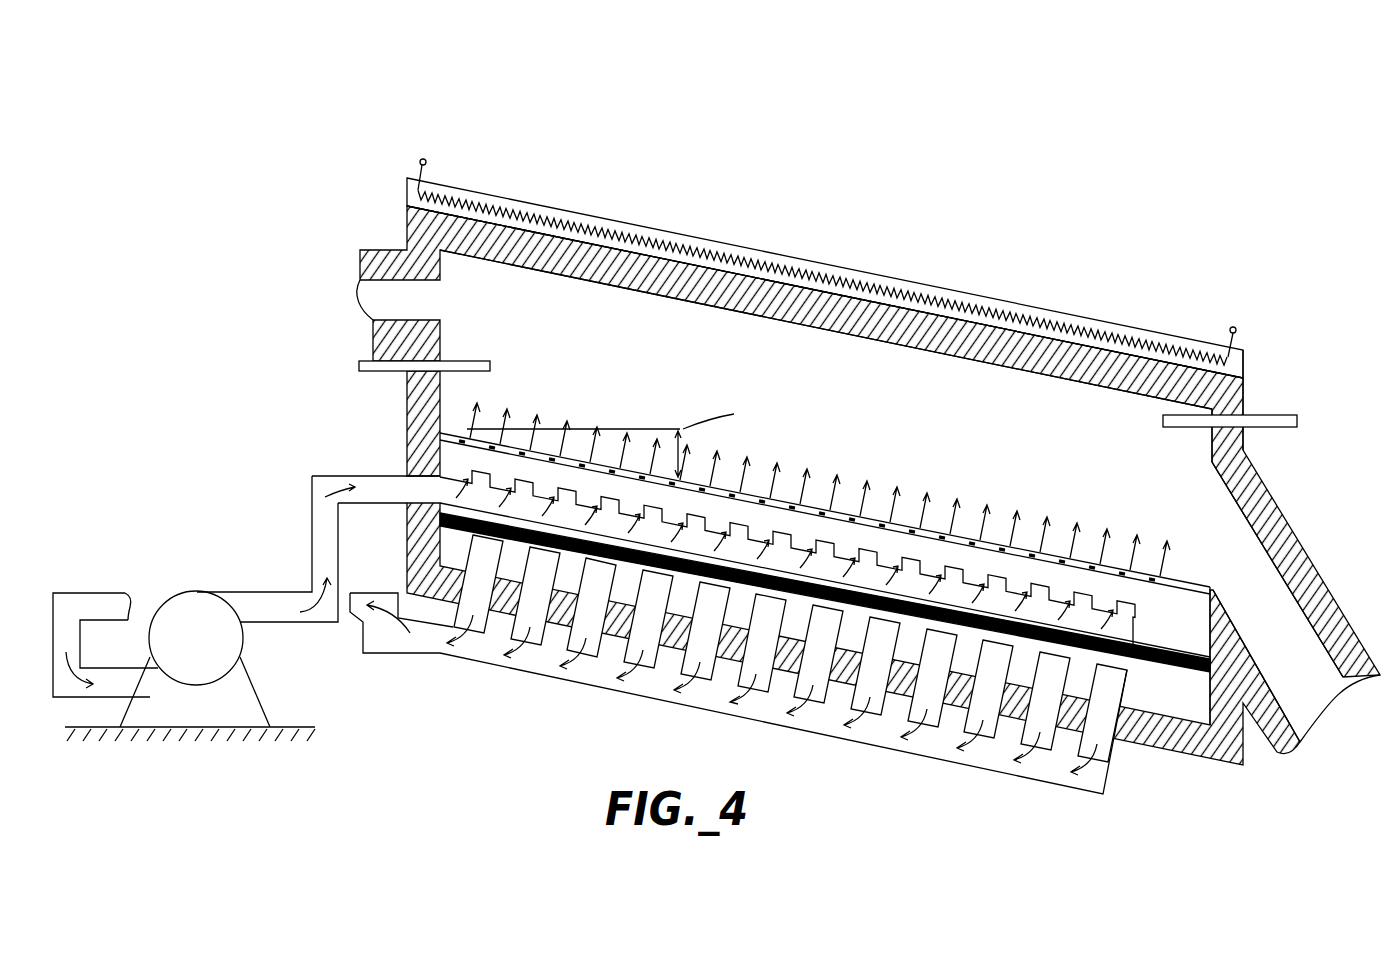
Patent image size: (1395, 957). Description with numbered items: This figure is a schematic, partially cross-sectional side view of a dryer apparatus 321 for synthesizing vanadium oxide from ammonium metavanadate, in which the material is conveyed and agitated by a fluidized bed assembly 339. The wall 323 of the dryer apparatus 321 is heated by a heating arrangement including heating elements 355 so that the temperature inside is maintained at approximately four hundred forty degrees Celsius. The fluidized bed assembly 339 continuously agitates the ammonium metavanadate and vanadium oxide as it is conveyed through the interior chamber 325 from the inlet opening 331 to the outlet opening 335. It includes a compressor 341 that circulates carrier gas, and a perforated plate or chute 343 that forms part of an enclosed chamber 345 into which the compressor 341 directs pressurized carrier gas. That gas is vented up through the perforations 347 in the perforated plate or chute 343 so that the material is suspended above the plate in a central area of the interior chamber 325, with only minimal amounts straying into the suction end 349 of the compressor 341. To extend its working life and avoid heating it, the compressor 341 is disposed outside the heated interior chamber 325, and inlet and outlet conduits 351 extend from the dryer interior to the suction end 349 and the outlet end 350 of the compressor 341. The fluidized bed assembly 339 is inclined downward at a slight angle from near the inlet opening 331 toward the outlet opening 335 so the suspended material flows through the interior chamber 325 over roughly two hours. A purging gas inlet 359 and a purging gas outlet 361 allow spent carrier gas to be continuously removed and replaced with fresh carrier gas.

The dryer apparatus 321 is at (757, 168).
The wall 323 is at (1000, 342).
The interior chamber 325 is at (884, 358).
The inlet opening 331 is at (392, 302).
The outlet opening 335 is at (1308, 692).
The fluidized bed assembly 339 is at (1247, 388).
The compressor 341 is at (187, 592).
The perforated plate or chute 343 is at (863, 515).
The enclosed chamber 345 is at (448, 453).
The perforations 347 is at (983, 547).
The suction end 349 is at (147, 682).
The outlet end 350 is at (230, 598).
The inlet and outlet conduits 351 is at (310, 512).
The heating elements 355 is at (560, 212).
The purging gas inlet 359 is at (378, 368).
The purging gas outlet 361 is at (1257, 416).